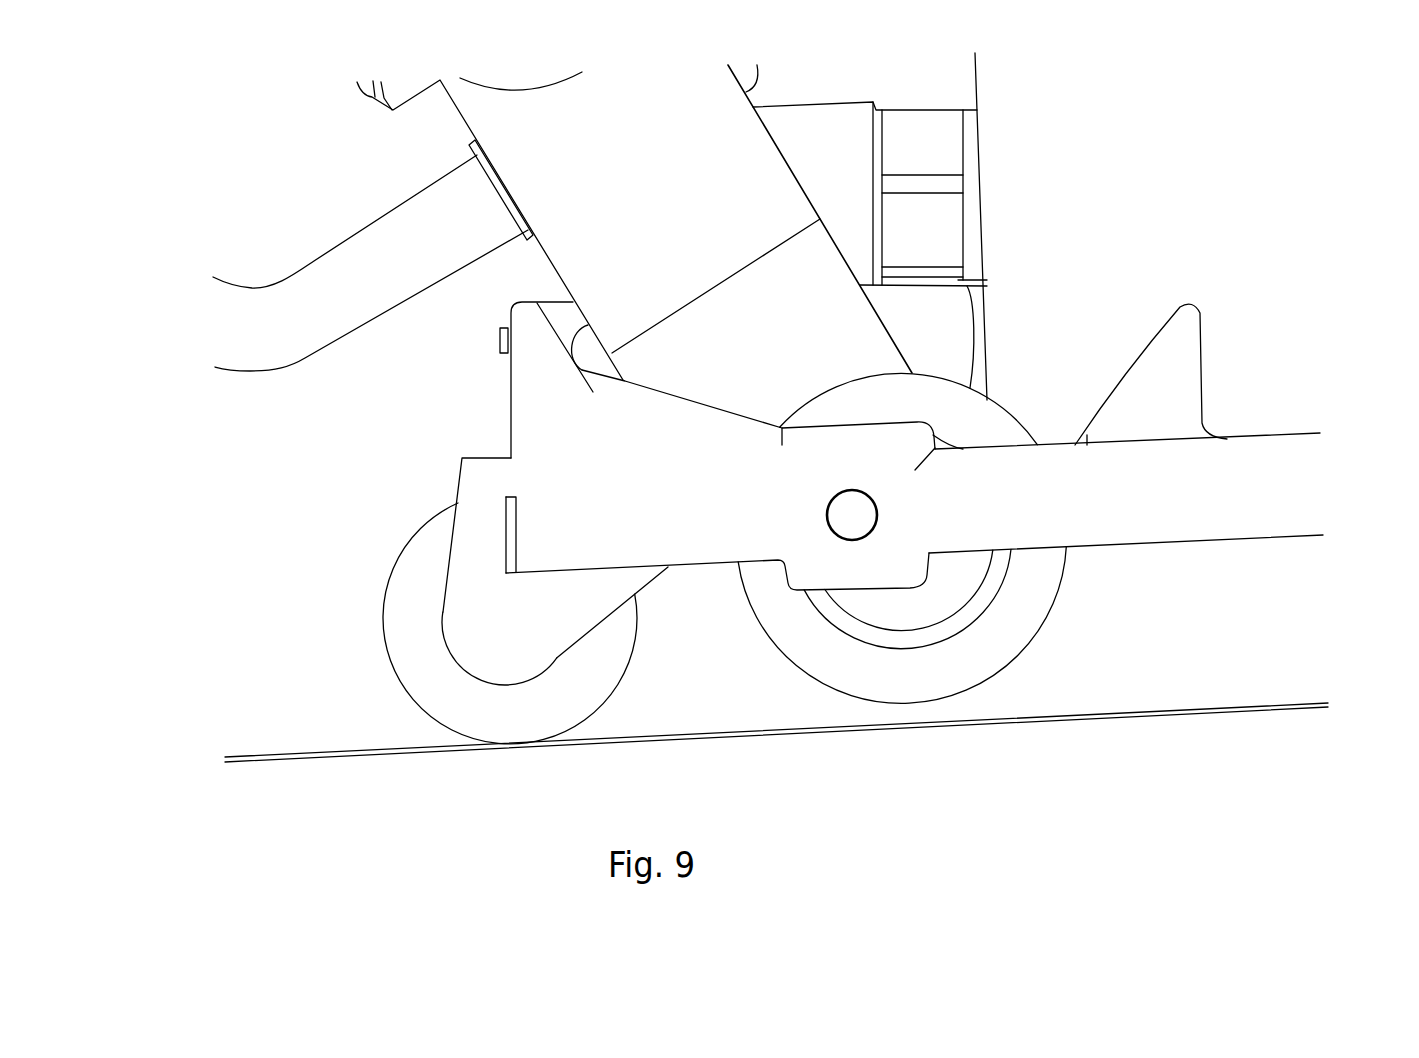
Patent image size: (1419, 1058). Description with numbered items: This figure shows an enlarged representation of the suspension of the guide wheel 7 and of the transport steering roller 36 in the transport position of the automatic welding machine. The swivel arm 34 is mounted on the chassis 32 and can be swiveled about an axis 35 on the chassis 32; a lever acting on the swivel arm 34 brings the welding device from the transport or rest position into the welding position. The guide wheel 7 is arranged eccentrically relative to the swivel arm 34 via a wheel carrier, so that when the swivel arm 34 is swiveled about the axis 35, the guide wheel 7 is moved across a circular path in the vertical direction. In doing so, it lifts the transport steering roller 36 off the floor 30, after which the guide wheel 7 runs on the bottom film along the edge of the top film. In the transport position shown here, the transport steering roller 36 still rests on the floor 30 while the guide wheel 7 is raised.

The wheel 7 is at (1020, 634).
The floor surface 30 is at (1325, 702).
The support arm 32 is at (1163, 525).
The bracket 34 is at (757, 158).
The axle pivot 35 is at (843, 522).
The caster wheel 36 is at (398, 603).